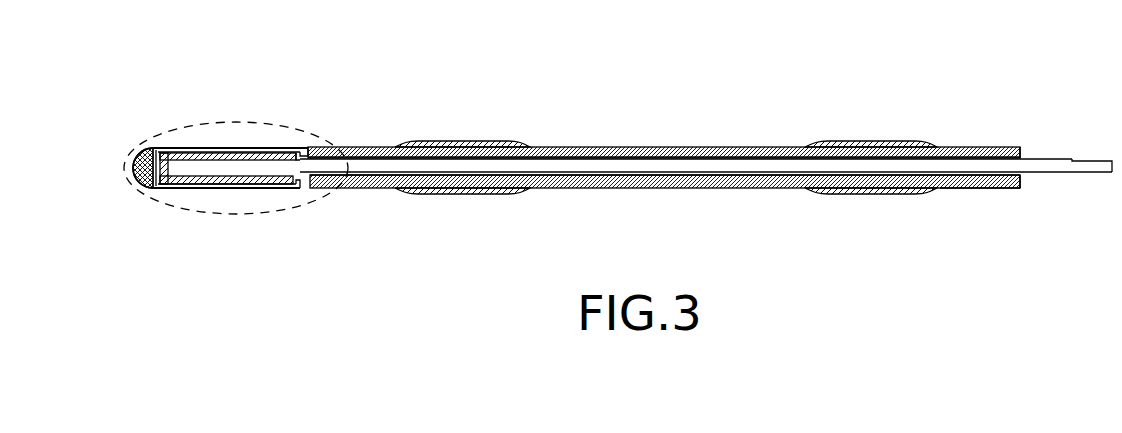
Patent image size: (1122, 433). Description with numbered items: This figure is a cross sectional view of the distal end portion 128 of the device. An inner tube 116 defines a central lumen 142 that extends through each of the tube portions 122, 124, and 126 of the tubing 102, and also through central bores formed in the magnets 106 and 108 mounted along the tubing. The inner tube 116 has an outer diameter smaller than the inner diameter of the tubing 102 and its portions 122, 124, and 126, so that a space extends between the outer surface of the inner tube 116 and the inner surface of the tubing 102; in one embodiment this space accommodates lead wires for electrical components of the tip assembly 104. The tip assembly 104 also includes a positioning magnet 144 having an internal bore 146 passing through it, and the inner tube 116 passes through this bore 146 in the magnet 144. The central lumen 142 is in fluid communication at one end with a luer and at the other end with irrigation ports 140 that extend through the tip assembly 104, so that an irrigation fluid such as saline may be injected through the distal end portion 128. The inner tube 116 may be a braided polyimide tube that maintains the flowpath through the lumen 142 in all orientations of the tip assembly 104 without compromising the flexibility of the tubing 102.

The tubing 102 is at (1038, 148).
The tip assembly 104 is at (232, 214).
The magnet 106 is at (448, 147).
The magnet 108 is at (860, 147).
The inner tube 116 is at (1076, 172).
The tube portion 122 is at (988, 188).
The tube portion 124 is at (683, 148).
The tube portion 126 is at (372, 148).
The distal end portion 128 is at (583, 101).
The irrigation ports 140 is at (134, 168).
The central lumen 142 is at (714, 168).
The positioning magnet 144 is at (270, 180).
The internal bore 146 is at (238, 165).